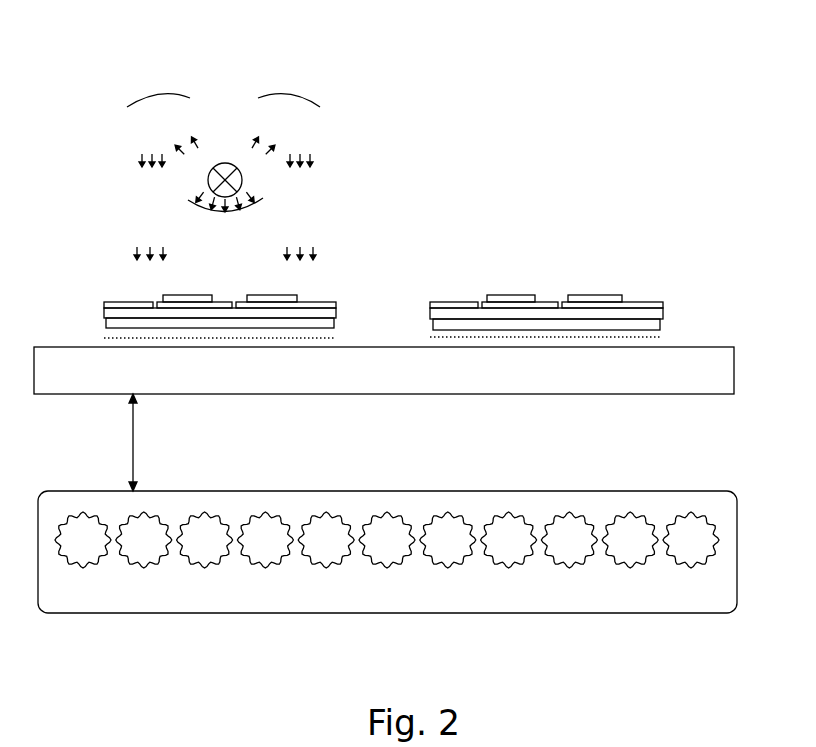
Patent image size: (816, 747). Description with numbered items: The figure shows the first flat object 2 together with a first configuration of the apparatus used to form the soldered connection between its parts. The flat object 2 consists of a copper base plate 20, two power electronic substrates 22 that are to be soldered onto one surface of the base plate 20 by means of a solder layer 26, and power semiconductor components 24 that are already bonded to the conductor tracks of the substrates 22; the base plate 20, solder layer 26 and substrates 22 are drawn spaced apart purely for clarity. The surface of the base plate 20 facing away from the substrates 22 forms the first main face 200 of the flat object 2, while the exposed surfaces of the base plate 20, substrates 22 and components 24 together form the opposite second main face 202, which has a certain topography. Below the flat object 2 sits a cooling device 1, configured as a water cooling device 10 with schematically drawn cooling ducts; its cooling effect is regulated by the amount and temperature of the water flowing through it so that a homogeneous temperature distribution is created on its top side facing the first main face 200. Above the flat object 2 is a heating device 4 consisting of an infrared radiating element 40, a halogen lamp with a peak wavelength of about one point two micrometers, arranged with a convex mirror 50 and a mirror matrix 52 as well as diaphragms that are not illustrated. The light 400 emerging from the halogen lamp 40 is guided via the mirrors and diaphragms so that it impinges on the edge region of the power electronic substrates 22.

The cooling device 1 is at (387, 527).
The water cooling device 10 is at (540, 495).
The flat object 2 is at (226, 432).
The heating device 4 is at (383, 104).
The base plate 20 is at (388, 384).
The first main face 200 is at (396, 400).
The second main face 202 is at (52, 343).
The power electronic substrate 22 is at (458, 314).
The power semiconductor component 24 is at (534, 299).
The solder layer 26 is at (631, 334).
The infrared radiating element 40 is at (226, 163).
The light 400 is at (314, 242).
The convex mirror 50 is at (250, 212).
The mirror matrix 52 is at (309, 97).